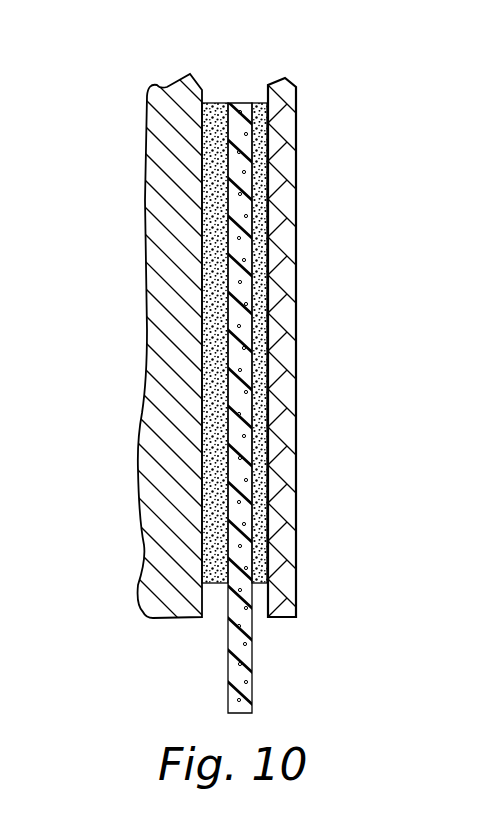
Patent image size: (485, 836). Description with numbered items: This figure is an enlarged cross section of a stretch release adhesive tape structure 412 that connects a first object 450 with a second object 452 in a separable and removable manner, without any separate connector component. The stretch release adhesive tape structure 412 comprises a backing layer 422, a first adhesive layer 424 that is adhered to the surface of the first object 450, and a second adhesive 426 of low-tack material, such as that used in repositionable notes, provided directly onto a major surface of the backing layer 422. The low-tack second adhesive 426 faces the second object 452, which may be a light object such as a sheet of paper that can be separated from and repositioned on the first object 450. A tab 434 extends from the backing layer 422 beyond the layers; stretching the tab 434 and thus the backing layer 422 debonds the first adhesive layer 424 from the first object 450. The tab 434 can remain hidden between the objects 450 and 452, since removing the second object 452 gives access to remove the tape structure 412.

The stretch release adhesive tape structure 412 is at (231, 84).
The backing layer 422 is at (238, 188).
The first adhesive layer 424 is at (215, 147).
The second adhesive 426 is at (260, 103).
The tab 434 is at (233, 647).
The first object 450 is at (150, 383).
The second object 452 is at (290, 397).